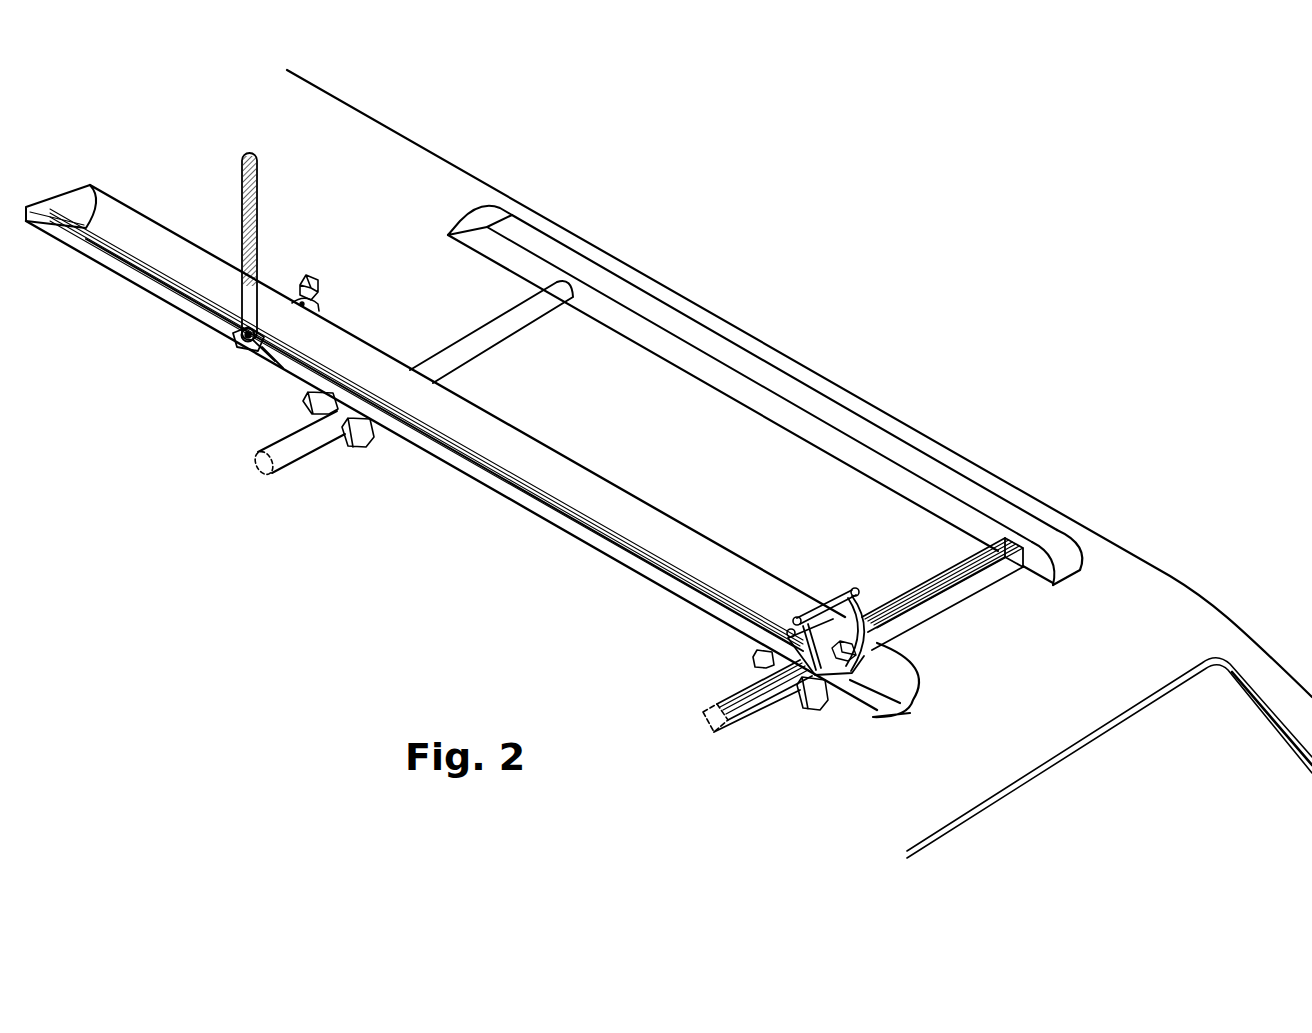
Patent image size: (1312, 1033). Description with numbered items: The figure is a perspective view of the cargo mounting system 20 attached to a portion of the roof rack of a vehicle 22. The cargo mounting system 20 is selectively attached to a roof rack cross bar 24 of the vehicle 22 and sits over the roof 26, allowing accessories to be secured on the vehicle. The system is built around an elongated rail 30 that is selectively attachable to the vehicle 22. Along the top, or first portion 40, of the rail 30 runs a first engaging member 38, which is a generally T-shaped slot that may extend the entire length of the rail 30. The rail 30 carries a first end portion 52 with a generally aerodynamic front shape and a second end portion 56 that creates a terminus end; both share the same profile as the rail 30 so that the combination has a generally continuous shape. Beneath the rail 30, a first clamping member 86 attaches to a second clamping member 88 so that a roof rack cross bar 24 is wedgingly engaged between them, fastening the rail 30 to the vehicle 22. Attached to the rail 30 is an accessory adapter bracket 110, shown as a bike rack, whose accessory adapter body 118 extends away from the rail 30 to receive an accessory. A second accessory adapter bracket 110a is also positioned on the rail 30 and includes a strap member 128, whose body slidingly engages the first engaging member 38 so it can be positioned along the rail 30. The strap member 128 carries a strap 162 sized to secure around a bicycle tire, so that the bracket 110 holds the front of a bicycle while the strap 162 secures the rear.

The cargo mounting system 20 is at (512, 462).
The vehicle 22 is at (765, 395).
The roof rack cross bar 24 is at (480, 337).
The roof 26 is at (776, 357).
The rail 30 is at (512, 437).
The first engaging member 38 is at (712, 581).
The first portion of the rail 40 is at (190, 240).
The first end portion 52 is at (898, 688).
The second end portion 56 is at (73, 204).
The first clamping member 86 is at (313, 413).
The second clamping member 88 is at (358, 447).
The accessory adapter bracket 110 is at (745, 591).
The second accessory adapter bracket 110a is at (325, 272).
The accessory adapter body 118 is at (800, 643).
The strap member 128 is at (240, 357).
The strap 162 is at (258, 211).